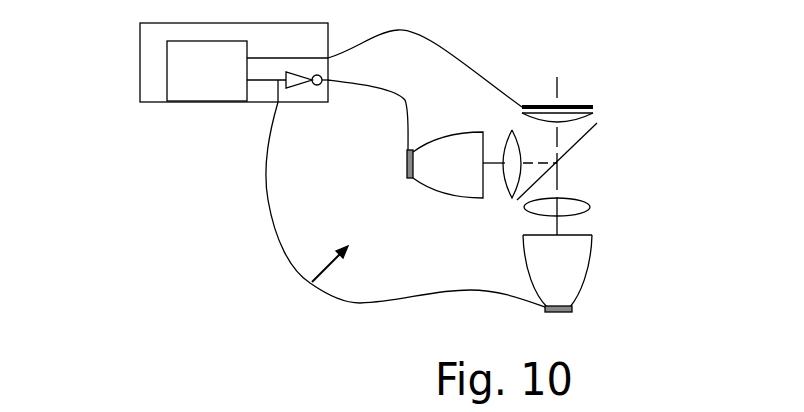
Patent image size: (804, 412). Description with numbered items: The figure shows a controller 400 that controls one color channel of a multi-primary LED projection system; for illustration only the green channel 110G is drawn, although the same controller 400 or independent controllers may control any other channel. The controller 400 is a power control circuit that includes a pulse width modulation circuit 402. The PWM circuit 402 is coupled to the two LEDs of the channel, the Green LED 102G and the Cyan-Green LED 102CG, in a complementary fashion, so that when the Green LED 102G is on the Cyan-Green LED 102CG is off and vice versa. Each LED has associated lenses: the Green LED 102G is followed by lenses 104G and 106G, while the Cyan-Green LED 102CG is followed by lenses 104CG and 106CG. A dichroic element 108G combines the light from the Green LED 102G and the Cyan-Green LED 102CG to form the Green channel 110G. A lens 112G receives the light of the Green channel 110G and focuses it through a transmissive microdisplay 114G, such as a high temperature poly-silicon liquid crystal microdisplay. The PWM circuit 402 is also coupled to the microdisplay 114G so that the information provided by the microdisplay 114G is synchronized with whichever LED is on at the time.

The controller 400 is at (140, 39).
The pulse width modulation circuit 402 is at (180, 103).
The Green LED 102G is at (407, 162).
The lens 104G is at (433, 187).
The lens 106G is at (509, 195).
The dichroic element 108G is at (585, 139).
The Green channel 110G is at (311, 283).
The lens 112G is at (522, 114).
The transmissive microdisplay 114G is at (580, 105).
The Cyan-Green LED 102CG is at (545, 310).
The lens 104CG is at (580, 293).
The lens 106CG is at (589, 211).